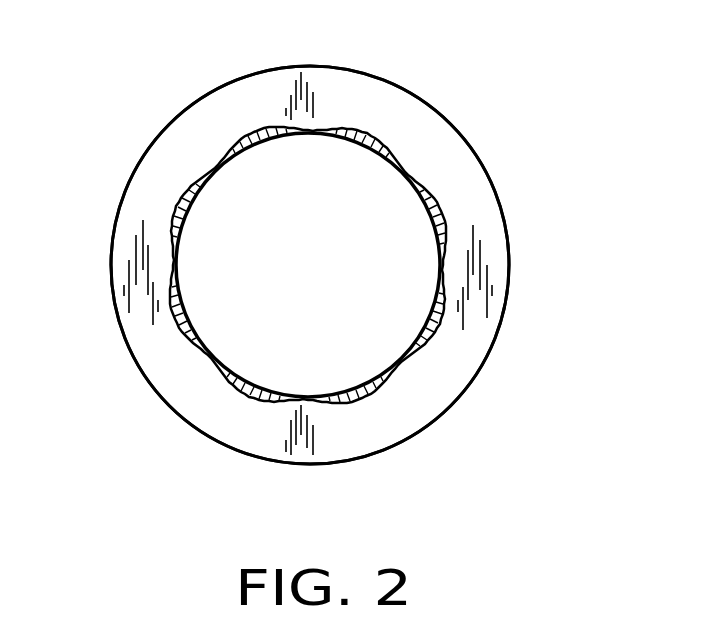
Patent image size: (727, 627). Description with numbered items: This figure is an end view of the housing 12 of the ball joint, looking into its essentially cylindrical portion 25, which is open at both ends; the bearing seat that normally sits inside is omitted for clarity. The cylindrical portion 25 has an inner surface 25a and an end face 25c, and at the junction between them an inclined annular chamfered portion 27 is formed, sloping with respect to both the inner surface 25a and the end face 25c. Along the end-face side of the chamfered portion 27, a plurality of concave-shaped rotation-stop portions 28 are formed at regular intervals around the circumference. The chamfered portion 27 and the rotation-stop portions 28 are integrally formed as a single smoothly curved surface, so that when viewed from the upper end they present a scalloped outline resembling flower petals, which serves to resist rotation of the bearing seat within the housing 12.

The housing 12 is at (453, 75).
The cylindrical portion 25 is at (450, 118).
The inner surface 25a is at (182, 231).
The end face 25c is at (128, 220).
The annular chamfered portion 27 is at (403, 170).
The rotation-stop portions 28 is at (445, 208).